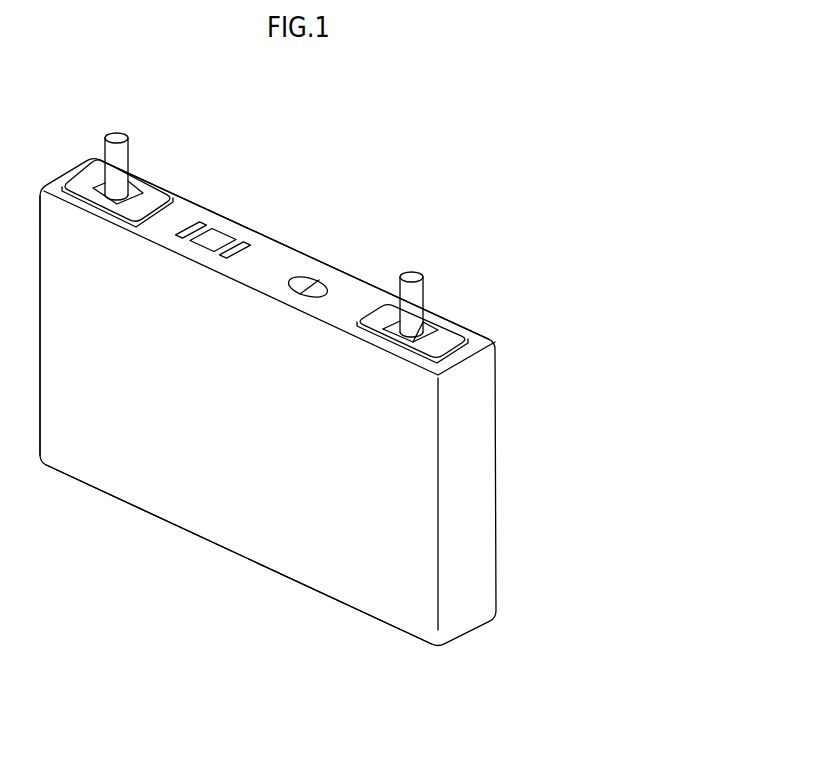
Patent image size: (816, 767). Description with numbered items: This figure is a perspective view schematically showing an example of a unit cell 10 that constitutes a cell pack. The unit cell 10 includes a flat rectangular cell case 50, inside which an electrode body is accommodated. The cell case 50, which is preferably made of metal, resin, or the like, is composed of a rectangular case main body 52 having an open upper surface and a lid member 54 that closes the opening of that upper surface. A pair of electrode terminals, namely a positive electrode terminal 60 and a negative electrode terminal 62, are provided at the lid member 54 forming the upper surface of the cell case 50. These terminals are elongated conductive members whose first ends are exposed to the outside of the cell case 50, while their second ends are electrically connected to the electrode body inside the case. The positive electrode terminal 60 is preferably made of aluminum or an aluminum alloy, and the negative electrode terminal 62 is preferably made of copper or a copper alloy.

The unit cell 10 is at (485, 144).
The cell case 50 is at (282, 528).
The case main body 52 is at (190, 490).
The lid member 54 is at (267, 248).
The positive electrode terminal 60 is at (413, 296).
The negative electrode terminal 62 is at (121, 158).